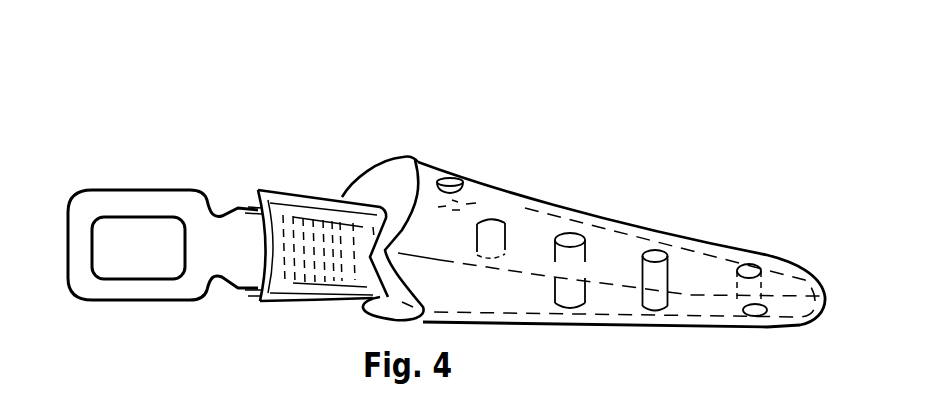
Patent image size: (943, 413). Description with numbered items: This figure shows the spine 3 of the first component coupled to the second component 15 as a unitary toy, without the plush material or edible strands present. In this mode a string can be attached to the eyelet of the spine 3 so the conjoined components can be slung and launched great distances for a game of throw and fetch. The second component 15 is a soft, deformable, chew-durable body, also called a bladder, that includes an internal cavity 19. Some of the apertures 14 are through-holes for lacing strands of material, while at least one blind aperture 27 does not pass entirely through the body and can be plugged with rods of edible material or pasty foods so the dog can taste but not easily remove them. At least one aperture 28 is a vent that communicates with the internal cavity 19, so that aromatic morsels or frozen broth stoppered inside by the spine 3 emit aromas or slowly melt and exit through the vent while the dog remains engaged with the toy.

The spine 3 is at (120, 190).
The second component 15 is at (373, 163).
The vent 28 is at (450, 180).
The blind aperture 27 is at (493, 218).
The internal cavity 19 is at (587, 218).
The apertures 14 is at (660, 240).